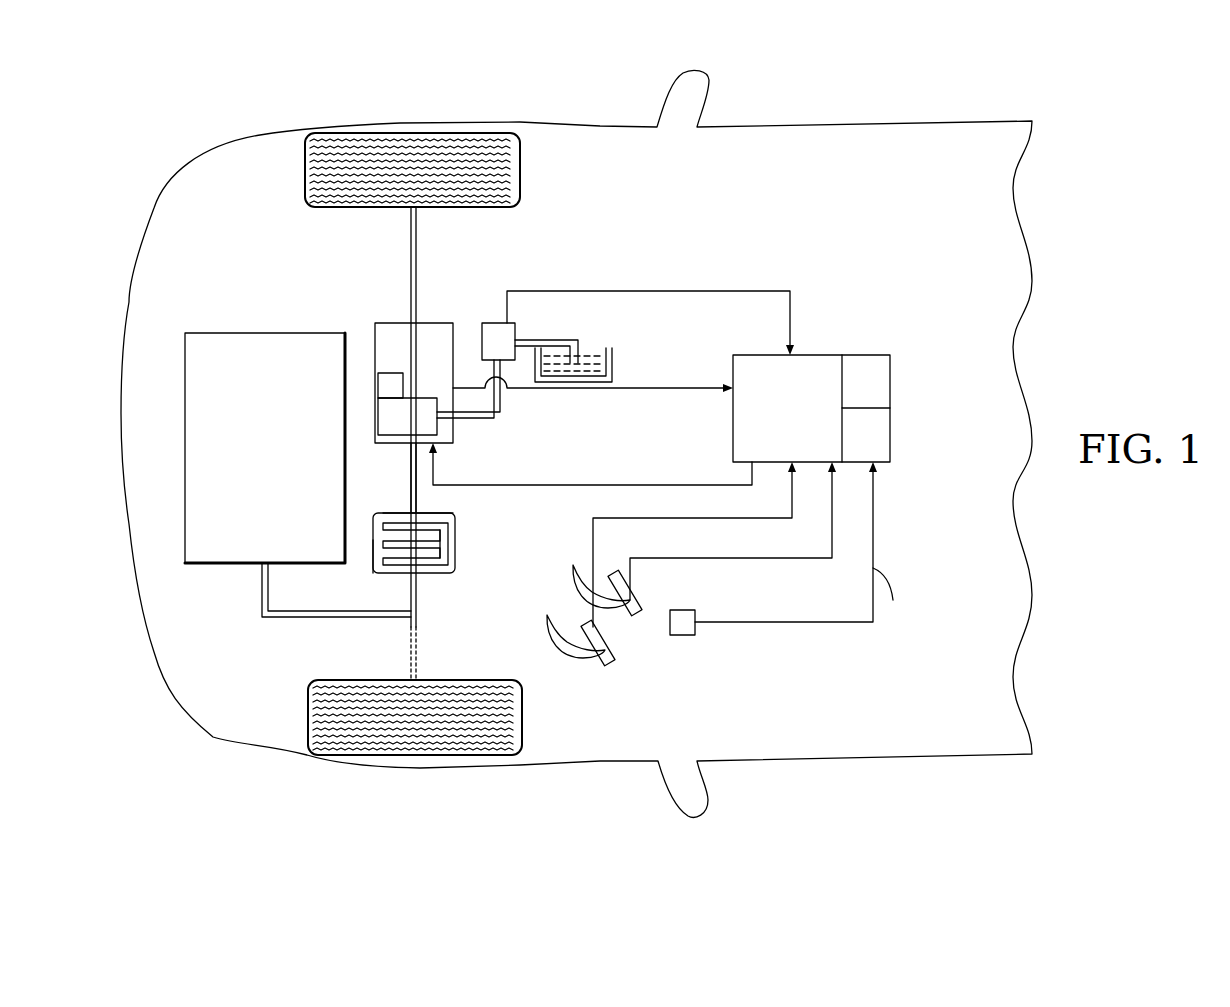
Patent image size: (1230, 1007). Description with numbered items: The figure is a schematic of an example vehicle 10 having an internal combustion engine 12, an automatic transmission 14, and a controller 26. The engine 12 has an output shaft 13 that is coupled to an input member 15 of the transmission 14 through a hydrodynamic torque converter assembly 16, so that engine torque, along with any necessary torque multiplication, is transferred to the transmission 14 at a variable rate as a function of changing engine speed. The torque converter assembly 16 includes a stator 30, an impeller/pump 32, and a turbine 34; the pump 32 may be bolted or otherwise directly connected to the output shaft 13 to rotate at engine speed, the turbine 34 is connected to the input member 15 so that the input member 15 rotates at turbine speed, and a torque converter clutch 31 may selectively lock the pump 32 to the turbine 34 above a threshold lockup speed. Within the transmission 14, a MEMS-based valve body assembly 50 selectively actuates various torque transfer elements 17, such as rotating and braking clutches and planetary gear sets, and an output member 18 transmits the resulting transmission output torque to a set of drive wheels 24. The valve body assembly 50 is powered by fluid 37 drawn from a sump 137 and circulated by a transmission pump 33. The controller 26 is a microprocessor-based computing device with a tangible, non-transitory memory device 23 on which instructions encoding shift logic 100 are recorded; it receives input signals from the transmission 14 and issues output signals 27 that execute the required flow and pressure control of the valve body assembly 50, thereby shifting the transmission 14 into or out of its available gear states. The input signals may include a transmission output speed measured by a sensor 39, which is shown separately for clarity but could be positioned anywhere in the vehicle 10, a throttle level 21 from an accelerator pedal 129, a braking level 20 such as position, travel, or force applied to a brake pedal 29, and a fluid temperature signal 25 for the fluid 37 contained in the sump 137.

The vehicle 10 is at (168, 130).
The internal combustion engine 12 is at (268, 452).
The output shaft 13 is at (345, 618).
The automatic transmission 14 is at (395, 323).
The input member 15 is at (410, 500).
The hydrodynamic torque converter assembly 16 is at (373, 565).
The torque transfer elements 17 is at (396, 428).
The output member 18 is at (416, 265).
The braking level 20 is at (792, 490).
The throttle level 21 is at (832, 523).
The memory device 23 is at (854, 446).
The drive wheels 24 is at (415, 133).
The fluid temperature signal 25 is at (643, 291).
The controller 26 is at (803, 420).
The output signals 27 is at (620, 485).
The brake pedal 29 is at (608, 660).
The stator 30 is at (383, 535).
The torque converter clutch 31 is at (455, 540).
The impeller/pump 32 is at (448, 573).
The transmission pump 33 is at (490, 323).
The turbine 34 is at (430, 513).
The fluid 37 is at (583, 352).
The sensor 39 is at (683, 636).
The MEMS-based valve body assembly 50 is at (392, 378).
The shift logic 100 is at (849, 396).
The accelerator pedal 129 is at (640, 595).
The sump 137 is at (612, 365).